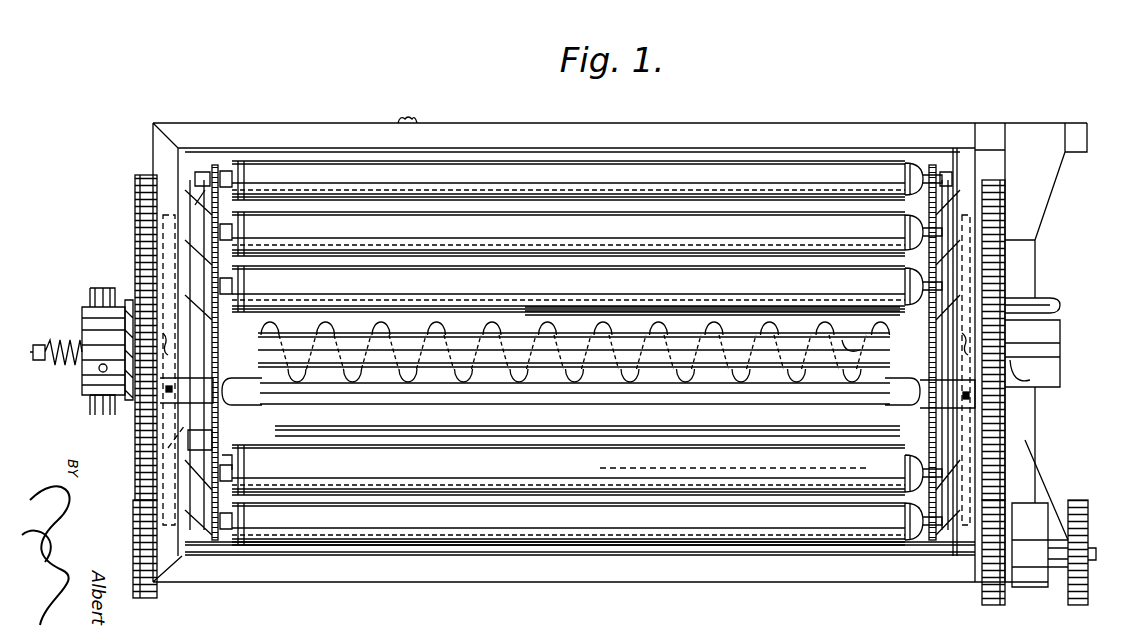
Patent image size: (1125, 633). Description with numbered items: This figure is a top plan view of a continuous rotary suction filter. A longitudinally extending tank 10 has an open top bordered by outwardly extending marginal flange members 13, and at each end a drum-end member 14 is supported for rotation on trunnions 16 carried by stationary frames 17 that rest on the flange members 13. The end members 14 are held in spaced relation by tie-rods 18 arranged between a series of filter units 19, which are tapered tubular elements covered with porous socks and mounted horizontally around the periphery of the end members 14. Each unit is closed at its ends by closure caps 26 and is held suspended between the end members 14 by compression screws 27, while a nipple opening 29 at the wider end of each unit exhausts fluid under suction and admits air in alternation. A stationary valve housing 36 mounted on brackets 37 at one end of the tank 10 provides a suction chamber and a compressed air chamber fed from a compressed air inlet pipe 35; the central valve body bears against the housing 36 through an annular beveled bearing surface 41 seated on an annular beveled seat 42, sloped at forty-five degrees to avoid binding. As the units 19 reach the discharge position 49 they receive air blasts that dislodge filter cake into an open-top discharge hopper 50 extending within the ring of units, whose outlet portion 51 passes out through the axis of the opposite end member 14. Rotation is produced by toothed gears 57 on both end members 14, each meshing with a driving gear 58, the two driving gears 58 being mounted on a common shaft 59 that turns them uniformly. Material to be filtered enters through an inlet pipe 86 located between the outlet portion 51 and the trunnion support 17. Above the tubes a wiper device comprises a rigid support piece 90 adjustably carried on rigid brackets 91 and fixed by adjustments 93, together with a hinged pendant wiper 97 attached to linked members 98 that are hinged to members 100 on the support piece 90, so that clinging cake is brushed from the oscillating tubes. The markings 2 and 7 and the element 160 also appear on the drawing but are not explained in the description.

The tank 10 is at (740, 150).
The marginal flange members 13 is at (862, 128).
The section line 2 is at (34, 363).
The section line 7 is at (121, 438).
The drum-end members 14 is at (1005, 447).
The trunnions 16 is at (1007, 463).
The stationary frames 17 is at (1040, 494).
The tie-rods 18 is at (650, 258).
The filter units 19 is at (314, 290).
The closure caps 26 is at (235, 185).
The compression screws 27 is at (195, 185).
The nipple opening 29 is at (248, 340).
The compressed air inlet pipe 35 is at (103, 362).
The valve housing 36 is at (86, 384).
The brackets 37 is at (96, 404).
The annular beveled bearing surface 41 is at (132, 296).
The annular beveled seat 42 is at (128, 302).
The discharge position 49 is at (200, 443).
The discharge hopper 50 is at (258, 458).
The outlet portion 51 is at (1074, 313).
The toothed gears 57 is at (143, 480).
The driving gears 58 is at (140, 526).
The common shaft 59 is at (515, 555).
The inlet pipe 86 is at (681, 313).
The rigid support piece 90 is at (262, 392).
The rigid brackets 91 is at (568, 336).
The adjustments 93 is at (963, 396).
The hinged pendant wiper 97 is at (280, 428).
The linked members 98 is at (912, 428).
The hinged members 100 is at (193, 393).
The conveyor end 160 is at (864, 350).